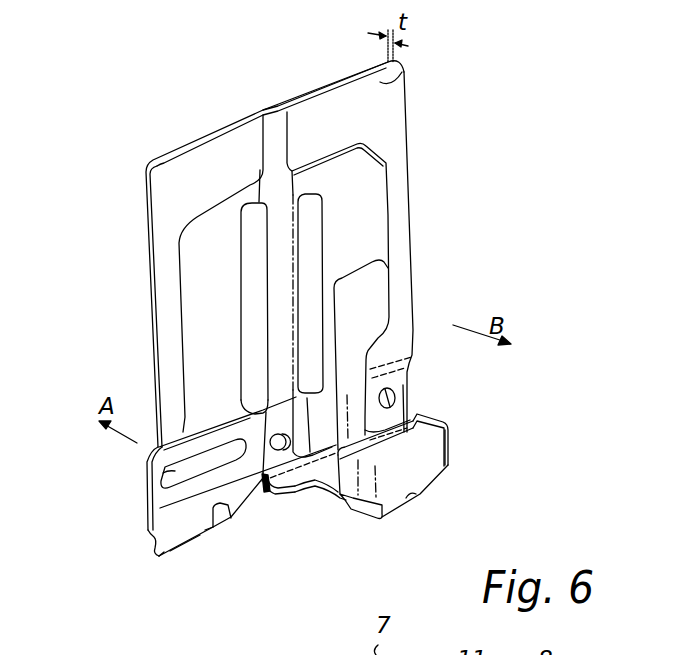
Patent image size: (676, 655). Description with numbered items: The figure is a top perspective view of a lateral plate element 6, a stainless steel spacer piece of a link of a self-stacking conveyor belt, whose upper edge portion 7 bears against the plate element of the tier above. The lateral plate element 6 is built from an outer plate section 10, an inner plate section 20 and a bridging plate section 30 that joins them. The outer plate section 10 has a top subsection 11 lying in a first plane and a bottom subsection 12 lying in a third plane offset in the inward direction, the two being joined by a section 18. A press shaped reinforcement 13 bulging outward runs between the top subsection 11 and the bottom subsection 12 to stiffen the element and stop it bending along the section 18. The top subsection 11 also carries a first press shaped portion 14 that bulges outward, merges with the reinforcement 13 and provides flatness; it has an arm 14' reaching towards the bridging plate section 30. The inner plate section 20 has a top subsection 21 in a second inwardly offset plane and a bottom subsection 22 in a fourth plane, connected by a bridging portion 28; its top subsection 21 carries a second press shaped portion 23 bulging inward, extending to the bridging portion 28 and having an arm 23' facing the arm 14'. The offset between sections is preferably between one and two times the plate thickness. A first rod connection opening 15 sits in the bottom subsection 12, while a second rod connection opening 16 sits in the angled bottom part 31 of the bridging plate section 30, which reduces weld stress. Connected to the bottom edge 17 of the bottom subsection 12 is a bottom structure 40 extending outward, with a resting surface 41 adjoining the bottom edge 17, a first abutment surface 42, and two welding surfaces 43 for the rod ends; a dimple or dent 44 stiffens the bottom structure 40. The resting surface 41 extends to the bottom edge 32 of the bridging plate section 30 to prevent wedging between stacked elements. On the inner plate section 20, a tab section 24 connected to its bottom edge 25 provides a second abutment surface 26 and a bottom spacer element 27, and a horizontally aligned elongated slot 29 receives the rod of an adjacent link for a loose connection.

The lateral plate element 6 is at (473, 55).
The upper edge portion 7 is at (347, 80).
The outer plate section 10 is at (402, 72).
The top subsection 11 is at (398, 150).
The bottom subsection 12 is at (412, 383).
The reinforcement 13 is at (373, 297).
The first press shaped portion 14 is at (381, 289).
The arm 14' is at (319, 223).
The first rod connection opening 15 is at (394, 400).
The second rod connection opening 16 is at (242, 527).
The bottom edge 17 is at (445, 445).
The section bridging top and bottom subsections 18 is at (410, 371).
The inner plate section 20 is at (198, 150).
The top subsection 21 is at (162, 264).
The bottom subsection 22 is at (160, 505).
The second press shaped portion 23 is at (178, 273).
The arm 23' is at (244, 249).
The tab section 24 is at (187, 550).
The bottom edge 25 is at (148, 532).
The second abutment surface 26 is at (224, 533).
The bottom spacer element 27 is at (160, 547).
The bridging portion 28 is at (147, 462).
The elongated slot 29 is at (178, 472).
The bridging plate section 30 is at (273, 125).
The bottom part 31 is at (276, 450).
The bottom edge 32 is at (263, 475).
The bottom structure 40 is at (412, 472).
The resting surface 41 is at (287, 468).
The first abutment surface 42 is at (320, 505).
The welding surfaces 43 is at (450, 448).
The dimple or dent 44 is at (410, 500).